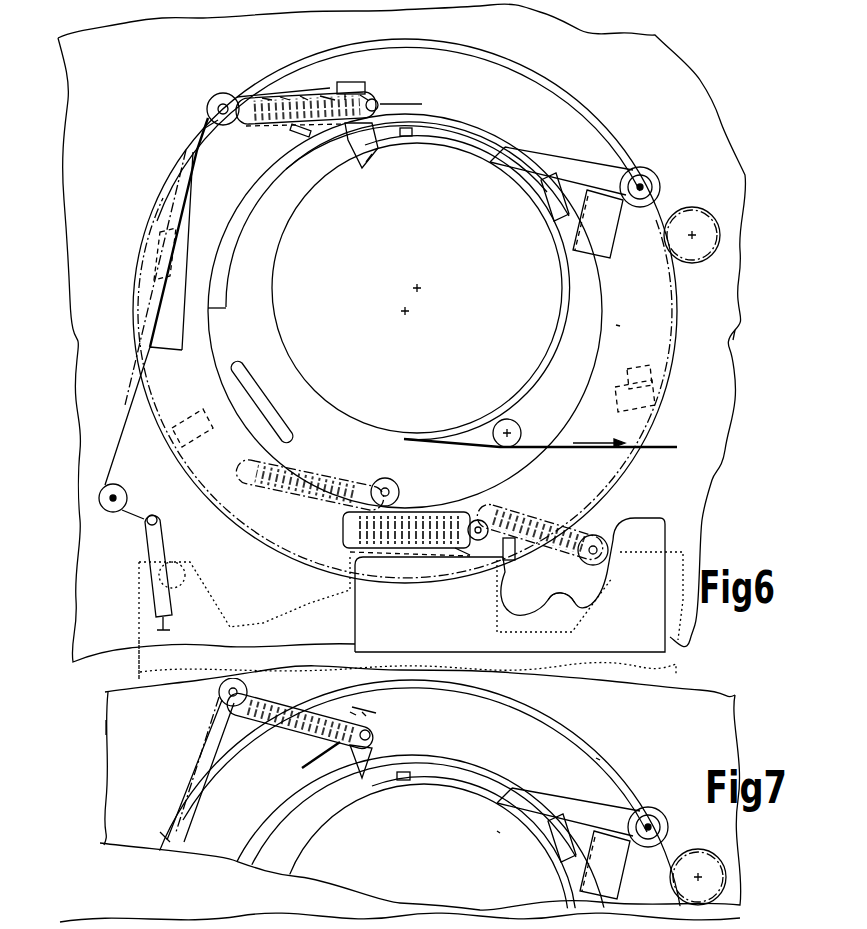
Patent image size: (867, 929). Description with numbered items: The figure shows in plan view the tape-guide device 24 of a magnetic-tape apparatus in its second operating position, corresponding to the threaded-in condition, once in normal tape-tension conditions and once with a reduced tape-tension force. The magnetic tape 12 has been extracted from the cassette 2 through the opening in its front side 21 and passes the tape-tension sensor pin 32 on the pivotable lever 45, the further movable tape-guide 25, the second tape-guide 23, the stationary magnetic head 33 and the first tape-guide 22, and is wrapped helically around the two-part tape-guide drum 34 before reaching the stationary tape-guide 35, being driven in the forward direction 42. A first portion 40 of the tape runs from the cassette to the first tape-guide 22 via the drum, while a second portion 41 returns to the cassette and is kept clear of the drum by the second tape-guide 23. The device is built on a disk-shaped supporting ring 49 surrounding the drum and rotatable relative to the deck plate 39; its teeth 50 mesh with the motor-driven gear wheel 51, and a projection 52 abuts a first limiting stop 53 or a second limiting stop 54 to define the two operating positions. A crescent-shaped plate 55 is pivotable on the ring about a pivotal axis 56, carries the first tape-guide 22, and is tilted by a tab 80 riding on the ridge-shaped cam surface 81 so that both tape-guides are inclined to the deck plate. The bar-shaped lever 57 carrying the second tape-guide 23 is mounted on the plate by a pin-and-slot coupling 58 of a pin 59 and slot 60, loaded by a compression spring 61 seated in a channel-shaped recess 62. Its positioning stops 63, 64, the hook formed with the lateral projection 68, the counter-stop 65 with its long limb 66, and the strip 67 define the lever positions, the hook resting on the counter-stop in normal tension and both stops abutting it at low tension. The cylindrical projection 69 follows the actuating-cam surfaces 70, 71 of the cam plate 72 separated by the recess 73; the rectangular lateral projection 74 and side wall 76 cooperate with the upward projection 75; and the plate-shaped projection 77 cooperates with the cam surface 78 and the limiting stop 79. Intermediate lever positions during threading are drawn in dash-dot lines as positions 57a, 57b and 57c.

In FIG. 6, the cassette 2 is at (136, 612).
In FIG. 6, the magnetic tape 12 is at (168, 624).
In FIG. 6, the front side of the cassette 21 is at (178, 565).
In FIG. 6, the first tape-guide 22 is at (644, 176).
In FIG. 7, the first tape-guide 22 is at (652, 822).
In FIG. 6, the second tape-guide 23 is at (207, 109).
In FIG. 7, the second tape-guide 23 is at (226, 698).
In FIG. 6, the tape-guide device 24 is at (616, 132).
In FIG. 7, the tape-guide device 24 is at (634, 773).
In FIG. 6, the further movable tape-guide 25 is at (118, 486).
In FIG. 6, the tape-tension sensor pin 32 is at (147, 521).
In FIG. 6, the stationary magnetic head 33 is at (608, 240).
In FIG. 7, the stationary magnetic head 33 is at (617, 875).
In FIG. 6, the tape-guide drum 34 is at (290, 318).
In FIG. 7, the tape-guide drum 34 is at (305, 855).
In FIG. 6, the stationary tape-guide 35 is at (520, 432).
In FIG. 6, the deck plate 39 is at (741, 345).
In FIG. 7, the deck plate 39 is at (96, 735).
In FIG. 6, the first portion of the magnetic tape 40 is at (658, 446).
In FIG. 7, the first portion of the magnetic tape 40 is at (525, 818).
In FIG. 6, the second portion of the magnetic tape 41 is at (545, 156).
In FIG. 7, the second portion of the magnetic tape 41 is at (556, 786).
In FIG. 6, the forward direction 42 is at (590, 442).
In FIG. 6, the lever 45 is at (150, 548).
In FIG. 6, the supporting ring 49 is at (643, 312).
In FIG. 7, the supporting ring 49 is at (596, 758).
In FIG. 6, the teeth 50 is at (673, 292).
In FIG. 7, the teeth 50 is at (163, 842).
In FIG. 6, the gear wheel 51 is at (693, 208).
In FIG. 7, the gear wheel 51 is at (698, 850).
In FIG. 6, the projection 52 is at (640, 366).
In FIG. 6, the first limiting stop 53 is at (186, 430).
In FIG. 6, the second limiting stop 54 is at (652, 399).
In FIG. 6, the crescent-shaped plate 55 is at (538, 98).
In FIG. 7, the crescent-shaped plate 55 is at (524, 720).
In FIG. 6, the pivotal axis 56 is at (208, 96).
In FIG. 7, the pivotal axis 56 is at (214, 742).
In FIG. 6, the lever 57 is at (262, 122).
In FIG. 7, the lever 57 is at (284, 729).
In FIG. 6, the lever position 57a is at (597, 488).
In FIG. 6, the lever position 57b is at (441, 512).
In FIG. 6, the lever position 57c is at (352, 447).
In FIG. 6, the pin-and-slot coupling 58 is at (363, 88).
In FIG. 7, the pin-and-slot coupling 58 is at (380, 730).
In FIG. 6, the pin 59 is at (380, 101).
In FIG. 6, the slot 60 is at (410, 105).
In FIG. 6, the compression spring 61 is at (250, 95).
In FIG. 7, the compression spring 61 is at (330, 738).
In FIG. 6, the channel-shaped recess 62 is at (285, 126).
In FIG. 6, the positioning stop 63 is at (360, 82).
In FIG. 7, the positioning stop 63 is at (366, 720).
In FIG. 6, the positioning stop 64 is at (360, 140).
In FIG. 7, the positioning stop 64 is at (368, 760).
In FIG. 6, the counter-stop 65 is at (333, 96).
In FIG. 7, the counter-stop 65 is at (350, 720).
In FIG. 6, the long limb 66 is at (300, 135).
In FIG. 6, the strip 67 is at (282, 102).
In FIG. 6, the lateral projection 68 is at (345, 82).
In FIG. 6, the cylindrical projection 69 is at (222, 124).
In FIG. 6, the actuating-cam surface 70 is at (580, 598).
In FIG. 6, the actuating-cam surface 71 is at (465, 556).
In FIG. 6, the cam plate 72 is at (358, 612).
In FIG. 6, the recess 73 is at (512, 606).
In FIG. 6, the rectangular lateral projection 74 is at (320, 98).
In FIG. 6, the upward projection 75 is at (516, 558).
In FIG. 6, the side wall 76 is at (300, 102).
In FIG. 6, the plate-shaped lateral projection 77 is at (373, 158).
In FIG. 6, the upward projection 78 is at (252, 402).
In FIG. 6, the limiting stop 79 is at (406, 137).
In FIG. 7, the limiting stop 79 is at (408, 781).
In FIG. 6, the tab 80 is at (538, 207).
In FIG. 7, the tab 80 is at (550, 848).
In FIG. 6, the ridge-shaped cam surface 81 is at (226, 270).
In FIG. 7, the ridge-shaped cam surface 81 is at (318, 790).